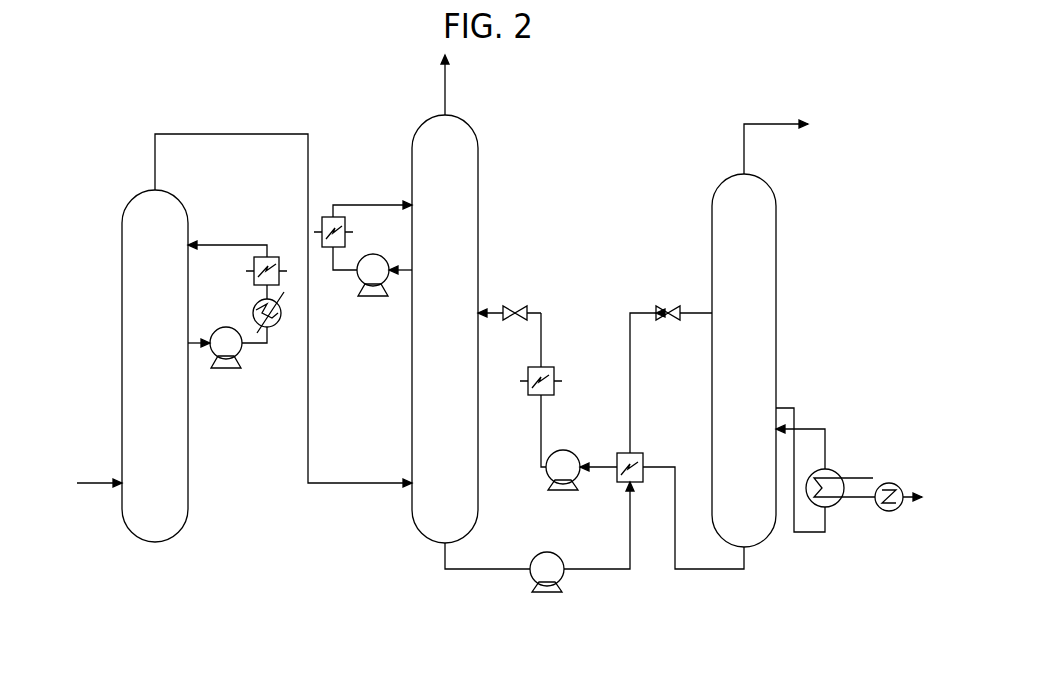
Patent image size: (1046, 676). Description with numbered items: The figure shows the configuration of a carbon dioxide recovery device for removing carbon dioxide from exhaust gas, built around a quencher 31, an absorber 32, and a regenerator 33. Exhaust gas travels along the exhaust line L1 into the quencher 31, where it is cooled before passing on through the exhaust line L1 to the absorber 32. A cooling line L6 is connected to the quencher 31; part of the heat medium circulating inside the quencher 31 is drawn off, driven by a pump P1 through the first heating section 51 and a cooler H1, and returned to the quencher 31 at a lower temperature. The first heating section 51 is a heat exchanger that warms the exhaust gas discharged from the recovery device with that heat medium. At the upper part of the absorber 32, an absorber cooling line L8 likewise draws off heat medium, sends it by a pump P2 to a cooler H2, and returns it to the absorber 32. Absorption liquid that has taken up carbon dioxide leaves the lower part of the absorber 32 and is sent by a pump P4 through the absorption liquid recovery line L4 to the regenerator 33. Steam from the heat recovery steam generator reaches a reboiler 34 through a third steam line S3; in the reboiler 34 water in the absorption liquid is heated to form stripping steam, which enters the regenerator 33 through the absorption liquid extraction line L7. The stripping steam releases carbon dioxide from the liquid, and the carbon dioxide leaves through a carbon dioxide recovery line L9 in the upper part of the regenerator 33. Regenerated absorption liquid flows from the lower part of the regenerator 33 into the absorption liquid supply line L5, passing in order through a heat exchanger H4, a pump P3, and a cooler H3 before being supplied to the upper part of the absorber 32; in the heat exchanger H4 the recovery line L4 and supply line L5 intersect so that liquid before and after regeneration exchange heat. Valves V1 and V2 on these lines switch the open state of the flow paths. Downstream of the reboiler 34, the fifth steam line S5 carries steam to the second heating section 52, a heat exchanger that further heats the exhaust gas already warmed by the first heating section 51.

The quencher 31 is at (155, 545).
The absorber 32 is at (422, 542).
The regenerator 33 is at (778, 320).
The reboiler 34 is at (818, 508).
The first heating section 51 is at (273, 337).
The second heating section 52 is at (892, 511).
The pump P1 is at (224, 372).
The pump P2 is at (372, 299).
The pump P3 is at (549, 484).
The pump P4 is at (548, 594).
The cooler H1 is at (273, 252).
The cooler H2 is at (331, 213).
The cooler H3 is at (556, 368).
The heat exchanger H4 is at (618, 478).
The valve V1 is at (515, 306).
The valve V2 is at (665, 306).
The exhaust line L1 is at (97, 483).
The absorption liquid recovery line L4 is at (632, 368).
The absorption liquid supply line L5 is at (543, 322).
The cooling line L6 is at (212, 245).
The absorption liquid extraction line L7 is at (800, 410).
The absorber cooling line L8 is at (373, 205).
The carbon dioxide recovery line L9 is at (748, 150).
The third steam line S3 is at (850, 478).
The fifth steam line S5 is at (858, 500).